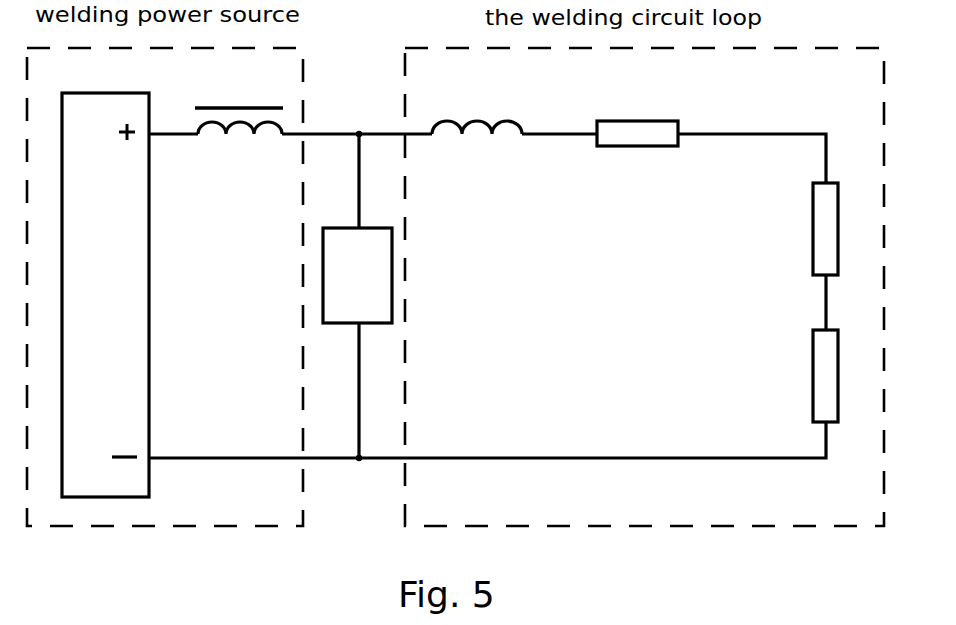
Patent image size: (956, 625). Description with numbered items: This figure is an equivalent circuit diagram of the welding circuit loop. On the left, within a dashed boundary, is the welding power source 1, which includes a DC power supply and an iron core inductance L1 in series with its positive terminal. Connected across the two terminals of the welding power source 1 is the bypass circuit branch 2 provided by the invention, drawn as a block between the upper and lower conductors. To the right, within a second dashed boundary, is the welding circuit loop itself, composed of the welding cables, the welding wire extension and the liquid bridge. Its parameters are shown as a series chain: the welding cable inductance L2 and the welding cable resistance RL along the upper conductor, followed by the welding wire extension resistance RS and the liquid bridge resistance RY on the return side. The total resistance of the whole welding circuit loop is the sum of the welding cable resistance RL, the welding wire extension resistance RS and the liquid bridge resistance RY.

The welding power source 1 is at (140, 295).
The bypass circuit branch 2 is at (357, 275).
The iron core inductance L1 is at (239, 97).
The welding cable inductance L2 is at (477, 101).
The welding cable resistance RL is at (637, 106).
The welding wire extension resistance RS is at (794, 229).
The liquid bridge resistance RY is at (798, 376).